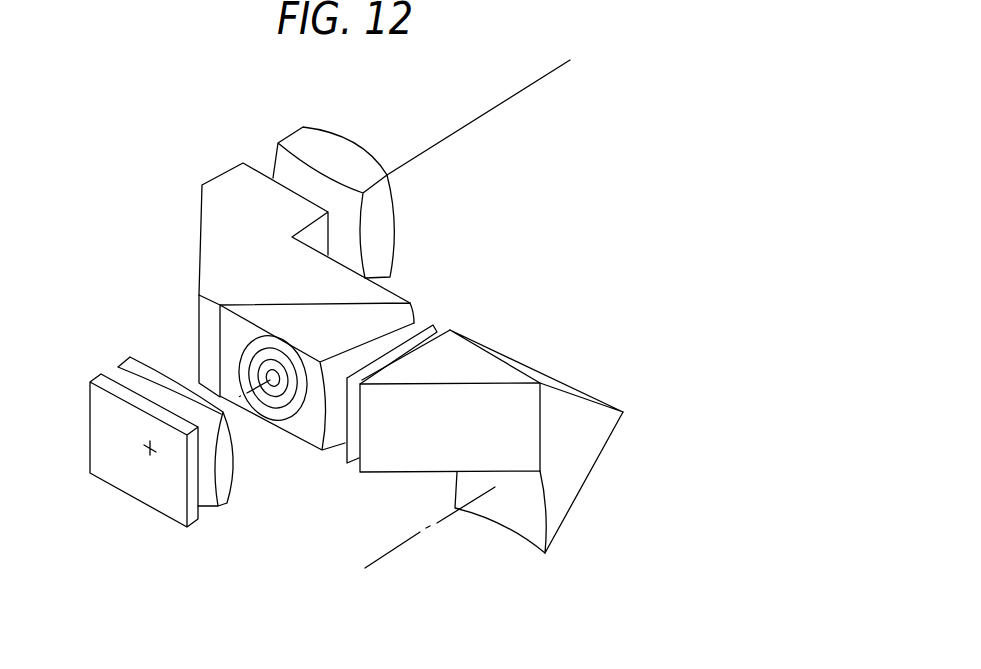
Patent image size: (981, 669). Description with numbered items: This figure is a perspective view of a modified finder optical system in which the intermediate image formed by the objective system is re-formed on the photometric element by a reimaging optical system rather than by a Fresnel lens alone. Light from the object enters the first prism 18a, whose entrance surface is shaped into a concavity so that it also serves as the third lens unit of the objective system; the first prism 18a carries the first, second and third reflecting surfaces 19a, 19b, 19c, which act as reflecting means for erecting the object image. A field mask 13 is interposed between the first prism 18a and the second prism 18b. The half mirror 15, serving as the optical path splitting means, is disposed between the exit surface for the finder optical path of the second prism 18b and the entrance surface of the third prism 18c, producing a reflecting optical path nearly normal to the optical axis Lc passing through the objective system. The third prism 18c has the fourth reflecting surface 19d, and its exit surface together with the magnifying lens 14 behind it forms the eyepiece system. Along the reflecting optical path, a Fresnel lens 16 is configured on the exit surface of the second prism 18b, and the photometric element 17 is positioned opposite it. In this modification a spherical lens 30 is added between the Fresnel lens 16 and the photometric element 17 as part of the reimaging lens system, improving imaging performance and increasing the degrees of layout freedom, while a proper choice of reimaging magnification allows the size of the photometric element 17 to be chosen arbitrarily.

The field mask 13 is at (440, 327).
The magnifying lens 14 is at (341, 150).
The half mirror 15 is at (268, 302).
The Fresnel lens 16 is at (278, 418).
The photometric element 17 is at (113, 483).
The first prism 18a is at (570, 473).
The second prism 18b is at (383, 312).
The third prism 18c is at (223, 185).
The first reflecting surface 19a is at (583, 514).
The second reflecting surface 19b is at (533, 371).
The third reflecting surface 19c is at (397, 463).
The fourth reflecting surface 19d is at (184, 235).
The spherical lens 30 is at (223, 493).
The optical axis Lc is at (413, 540).